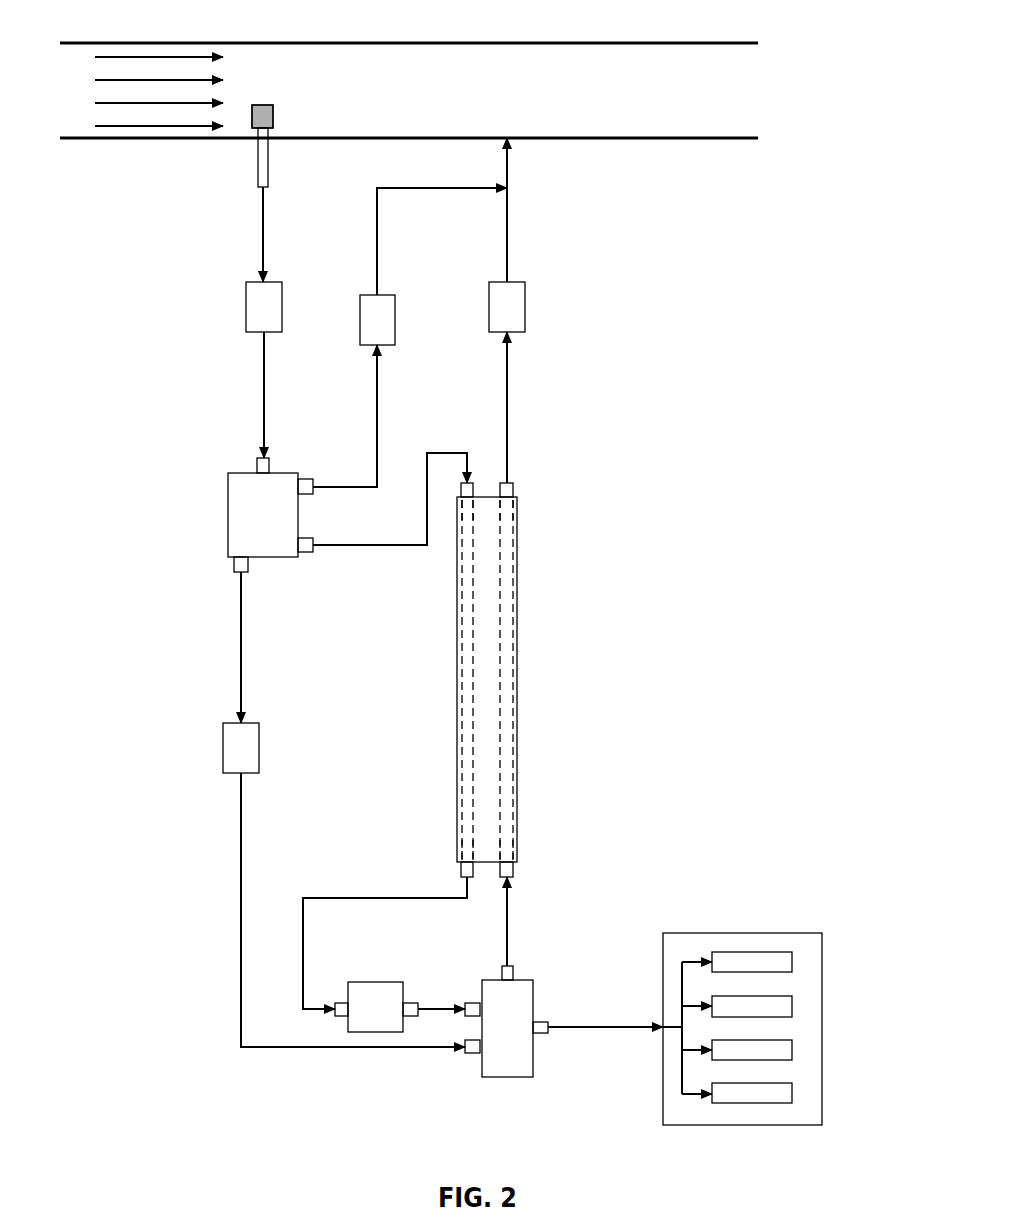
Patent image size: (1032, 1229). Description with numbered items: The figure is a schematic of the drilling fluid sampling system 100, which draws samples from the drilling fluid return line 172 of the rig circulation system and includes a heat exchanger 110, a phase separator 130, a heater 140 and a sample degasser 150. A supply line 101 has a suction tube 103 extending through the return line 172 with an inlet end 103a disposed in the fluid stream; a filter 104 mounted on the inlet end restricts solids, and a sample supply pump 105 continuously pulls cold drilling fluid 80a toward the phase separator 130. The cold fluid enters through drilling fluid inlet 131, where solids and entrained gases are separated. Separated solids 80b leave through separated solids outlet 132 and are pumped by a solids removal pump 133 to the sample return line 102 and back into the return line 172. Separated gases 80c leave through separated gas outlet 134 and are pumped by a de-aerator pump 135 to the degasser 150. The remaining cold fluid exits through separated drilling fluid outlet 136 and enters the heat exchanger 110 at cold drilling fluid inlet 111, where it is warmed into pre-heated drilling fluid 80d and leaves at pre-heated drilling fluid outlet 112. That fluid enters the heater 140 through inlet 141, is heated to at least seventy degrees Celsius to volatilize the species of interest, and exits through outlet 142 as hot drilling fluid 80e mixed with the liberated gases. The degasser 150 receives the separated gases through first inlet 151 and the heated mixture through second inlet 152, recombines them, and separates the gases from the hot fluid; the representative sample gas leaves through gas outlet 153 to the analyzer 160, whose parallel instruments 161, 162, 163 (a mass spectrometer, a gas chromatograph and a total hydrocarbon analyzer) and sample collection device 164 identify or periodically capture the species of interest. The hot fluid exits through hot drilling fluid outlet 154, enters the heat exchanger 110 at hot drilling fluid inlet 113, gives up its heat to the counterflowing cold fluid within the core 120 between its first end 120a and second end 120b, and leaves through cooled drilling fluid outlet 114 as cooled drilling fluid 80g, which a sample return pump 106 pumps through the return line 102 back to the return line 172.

The cold drilling fluid 80a is at (137, 78).
The separated solids 80b is at (380, 262).
The separated gases 80c is at (243, 648).
The pre-heated drilling fluid 80d is at (325, 897).
The hot drilling fluid 80e is at (510, 928).
The cooled drilling fluid 80g is at (510, 232).
The sampling system 100 is at (714, 302).
The supply line 101 is at (220, 377).
The sample return line 102 is at (640, 256).
The suction tube 103 is at (258, 148).
The inlet end 103a is at (273, 117).
The filter 104 is at (262, 116).
The sample supply pump 105 is at (246, 308).
The sample return pump 106 is at (525, 307).
The heat exchanger 110 is at (517, 695).
The cold drilling fluid inlet 111 is at (458, 490).
The pre-heated drilling fluid outlet 112 is at (461, 872).
The hot drilling fluid inlet 113 is at (515, 872).
The cooled drilling fluid outlet 114 is at (515, 490).
The core 120 is at (490, 625).
The first end 120a is at (518, 500).
The second end 120b is at (518, 860).
The phase separator 130 is at (228, 495).
The drilling fluid inlet 131 is at (255, 468).
The separated solids outlet 132 is at (305, 475).
The solids removal pump 133 is at (395, 335).
The separated gas outlet 134 is at (234, 563).
The de-aerator pump 135 is at (223, 748).
The separated drilling fluid outlet 136 is at (310, 540).
The heater 140 is at (375, 982).
The inlet 141 is at (340, 1017).
The outlet 142 is at (410, 1017).
The sample degasser 150 is at (535, 1000).
The first inlet 151 is at (468, 1055).
The second inlet 152 is at (468, 1017).
The gas outlet 153 is at (535, 1020).
The hot drilling fluid outlet 154 is at (515, 970).
The analyzer 160 is at (755, 933).
The instrument 161 is at (795, 962).
The instrument 162 is at (795, 1006).
The instrument 163 is at (795, 1050).
The sample collection device 164 is at (795, 1094).
The drilling fluid return line 172 is at (562, 43).